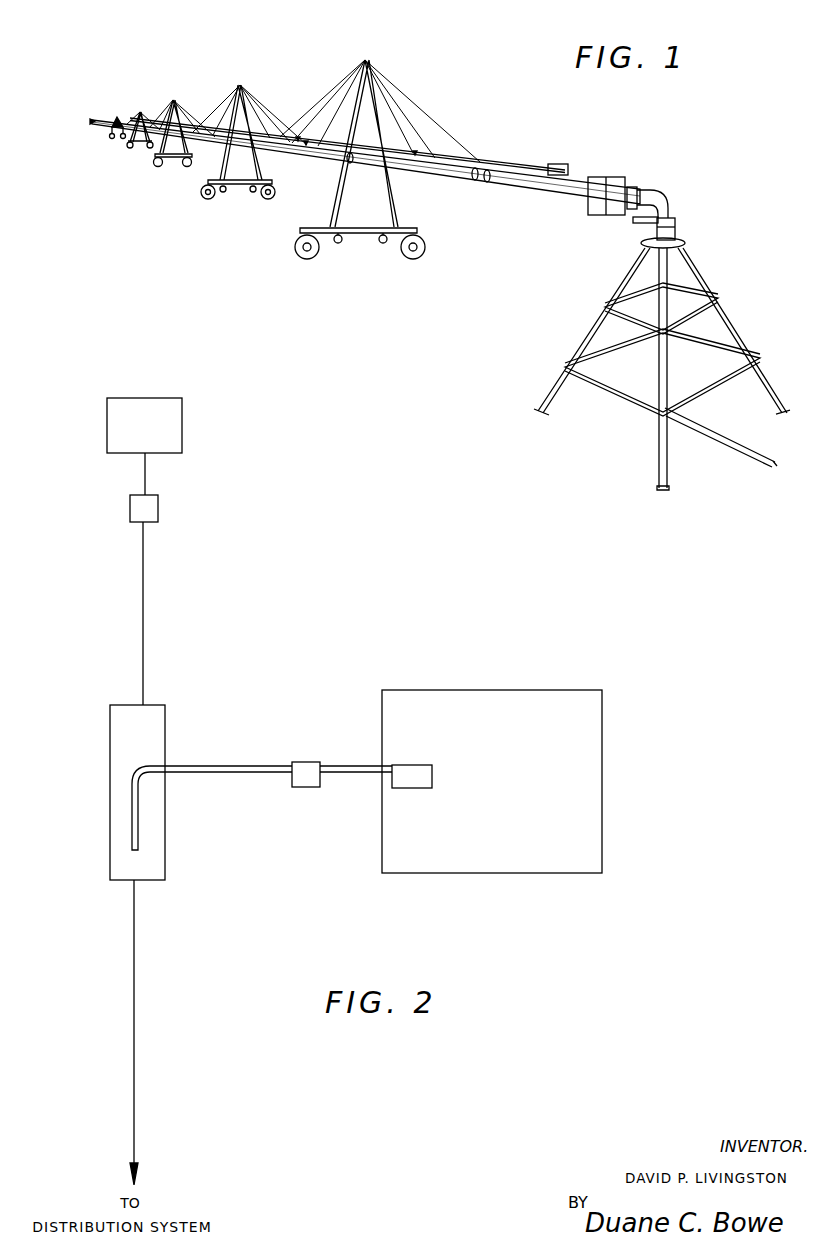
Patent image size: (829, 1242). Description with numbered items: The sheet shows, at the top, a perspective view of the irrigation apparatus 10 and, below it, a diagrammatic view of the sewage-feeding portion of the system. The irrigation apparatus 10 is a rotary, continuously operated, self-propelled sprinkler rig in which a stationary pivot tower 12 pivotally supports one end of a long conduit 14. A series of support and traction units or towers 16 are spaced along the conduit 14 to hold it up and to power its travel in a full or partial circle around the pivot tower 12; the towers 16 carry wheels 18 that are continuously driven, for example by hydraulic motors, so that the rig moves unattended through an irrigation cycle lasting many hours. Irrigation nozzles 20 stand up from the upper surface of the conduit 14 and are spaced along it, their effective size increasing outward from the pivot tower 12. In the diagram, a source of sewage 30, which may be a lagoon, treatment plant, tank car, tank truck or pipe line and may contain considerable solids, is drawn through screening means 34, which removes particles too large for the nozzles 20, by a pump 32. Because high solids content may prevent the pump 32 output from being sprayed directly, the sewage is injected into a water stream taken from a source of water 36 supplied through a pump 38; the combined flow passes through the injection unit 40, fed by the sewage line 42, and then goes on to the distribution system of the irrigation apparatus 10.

In FIG. 1, the irrigation apparatus 10 is at (502, 134).
In FIG. 1, the pivot tower 12 is at (700, 279).
In FIG. 1, the conduit 14 is at (567, 196).
In FIG. 1, the support and traction units 16 is at (174, 99).
In FIG. 1, the wheels 18 is at (187, 168).
In FIG. 1, the irrigation nozzles 20 is at (305, 141).
In FIG. 2, the source of sewage 30 is at (508, 724).
In FIG. 2, the pump 32 is at (303, 762).
In FIG. 2, the screening means 34 is at (418, 764).
In FIG. 2, the source of water 36 is at (177, 423).
In FIG. 2, the water pump 38 is at (153, 517).
In FIG. 2, the mixing tank 40 is at (166, 724).
In FIG. 2, the sewage conduit 42 is at (197, 766).